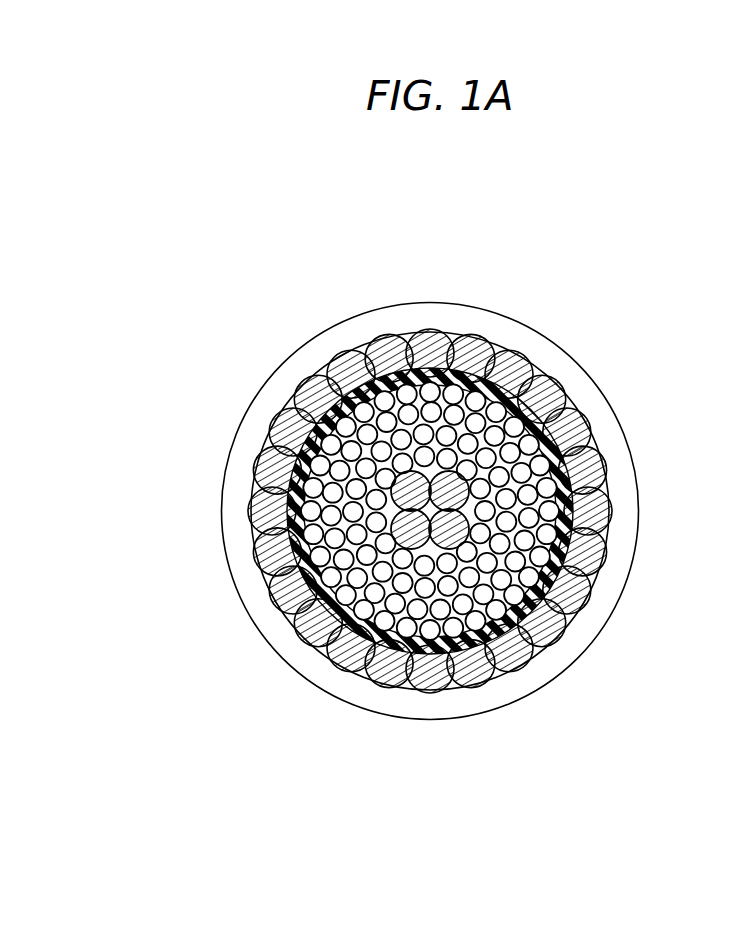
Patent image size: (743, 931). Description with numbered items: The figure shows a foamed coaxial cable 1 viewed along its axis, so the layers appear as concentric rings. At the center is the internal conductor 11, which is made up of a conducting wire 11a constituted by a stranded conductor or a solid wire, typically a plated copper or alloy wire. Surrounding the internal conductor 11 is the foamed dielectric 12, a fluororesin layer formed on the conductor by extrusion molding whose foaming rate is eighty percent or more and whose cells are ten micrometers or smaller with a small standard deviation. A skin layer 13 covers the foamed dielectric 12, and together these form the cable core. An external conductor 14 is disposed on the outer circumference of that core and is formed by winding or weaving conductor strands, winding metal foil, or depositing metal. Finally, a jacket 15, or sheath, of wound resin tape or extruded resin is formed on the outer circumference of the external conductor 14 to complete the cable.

The foamed coaxial cable 1 is at (608, 233).
The internal conductor 11 is at (391, 513).
The conducting wire 11a is at (302, 629).
The foamed dielectric 12 is at (342, 452).
The skin layer 13 is at (432, 348).
The external conductor 14 is at (578, 428).
The jacket 15 is at (617, 585).